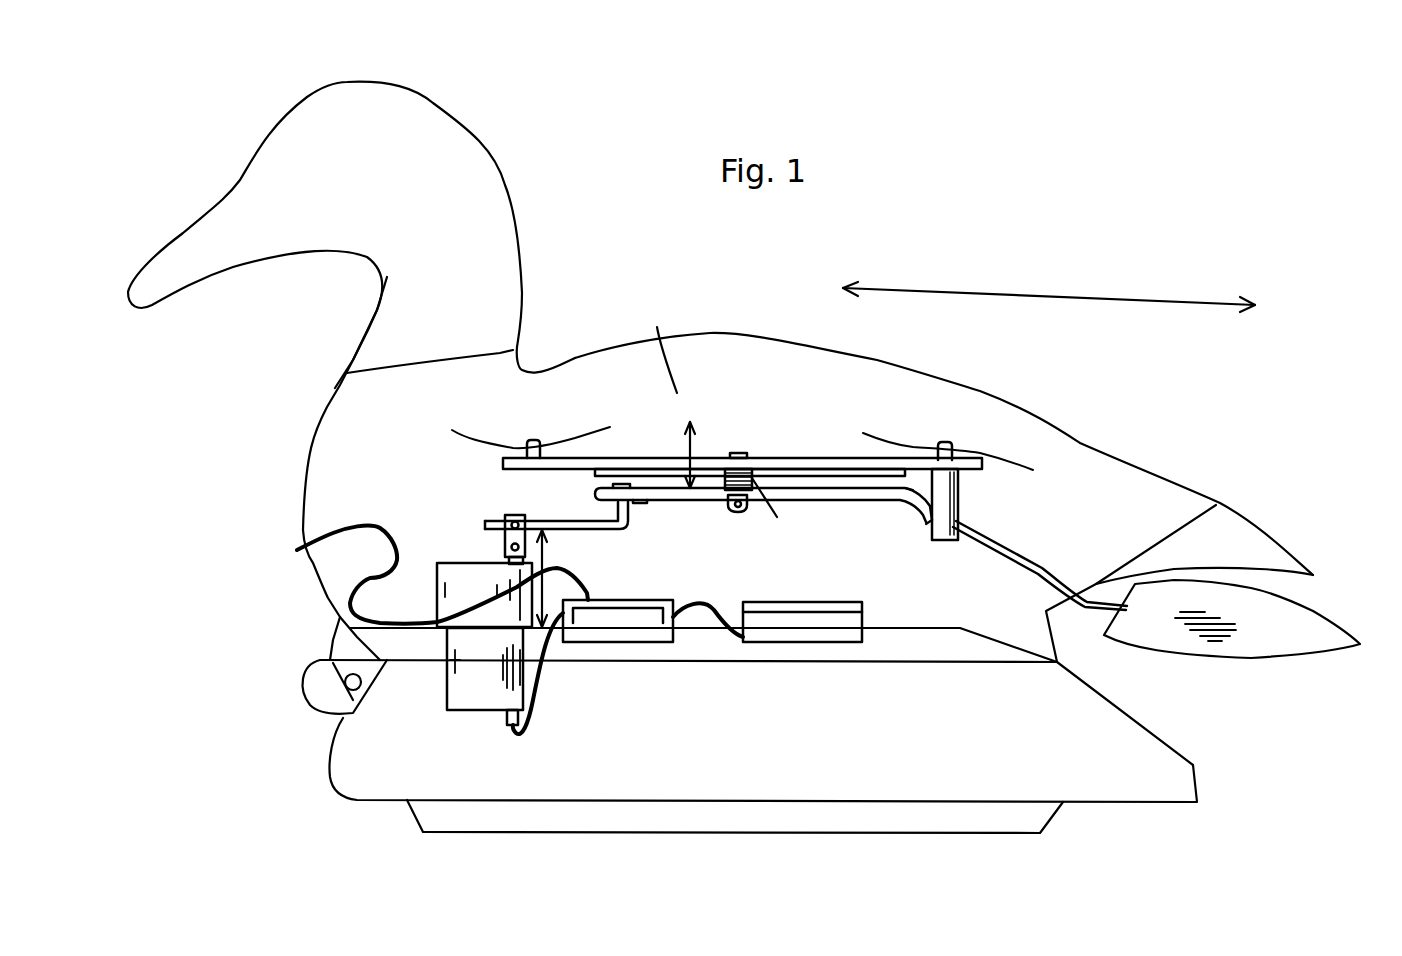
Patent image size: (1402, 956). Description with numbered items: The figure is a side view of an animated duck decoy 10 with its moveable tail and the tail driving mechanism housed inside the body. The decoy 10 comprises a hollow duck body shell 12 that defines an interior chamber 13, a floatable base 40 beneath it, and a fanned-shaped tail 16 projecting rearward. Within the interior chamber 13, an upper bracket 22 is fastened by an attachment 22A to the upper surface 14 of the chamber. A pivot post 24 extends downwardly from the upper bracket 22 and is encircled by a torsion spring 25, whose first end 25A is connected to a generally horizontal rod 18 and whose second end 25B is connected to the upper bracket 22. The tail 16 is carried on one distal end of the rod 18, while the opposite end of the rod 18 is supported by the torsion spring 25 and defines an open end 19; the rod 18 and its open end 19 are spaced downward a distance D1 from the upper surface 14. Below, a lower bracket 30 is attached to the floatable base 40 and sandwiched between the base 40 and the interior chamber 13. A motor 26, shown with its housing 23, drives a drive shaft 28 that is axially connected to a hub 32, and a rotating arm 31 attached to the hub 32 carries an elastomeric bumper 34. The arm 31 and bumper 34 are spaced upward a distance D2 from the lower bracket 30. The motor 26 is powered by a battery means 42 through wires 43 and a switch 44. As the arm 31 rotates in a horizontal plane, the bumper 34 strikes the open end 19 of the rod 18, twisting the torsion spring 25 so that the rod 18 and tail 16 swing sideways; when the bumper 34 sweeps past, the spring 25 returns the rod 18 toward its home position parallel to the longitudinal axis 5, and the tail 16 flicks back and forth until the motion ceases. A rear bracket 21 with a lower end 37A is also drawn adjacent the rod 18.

The longitudinal axis 5 is at (1116, 308).
The duck decoy 10 is at (788, 287).
The hollow duck body shell 12 is at (887, 360).
The interior chamber 13 is at (655, 341).
The upper surface 14 is at (610, 430).
The tail 16 is at (1278, 639).
The rod 18 is at (987, 543).
The open end 19 is at (595, 493).
The rear bracket 21 is at (960, 513).
The upper bracket 22 is at (838, 458).
The attachment 22A is at (533, 440).
The motor housing 23 is at (484, 644).
The pivot post 24 is at (733, 457).
The torsion spring 25 is at (780, 510).
The first end 25A is at (883, 486).
The second end 25B is at (595, 458).
The motor 26 is at (447, 565).
The drive shaft 28 is at (510, 558).
The lower bracket 30 is at (430, 632).
The rotating arm 31 is at (590, 532).
The hub 32 is at (513, 515).
The elastomeric bumper 34 is at (632, 507).
The bracket lower end 37A is at (940, 530).
The floatable base 40 is at (330, 740).
The battery means 42 is at (803, 610).
The wires 43 is at (700, 607).
The switch 44 is at (627, 602).
The distance D1 is at (703, 455).
The distance D2 is at (555, 578).